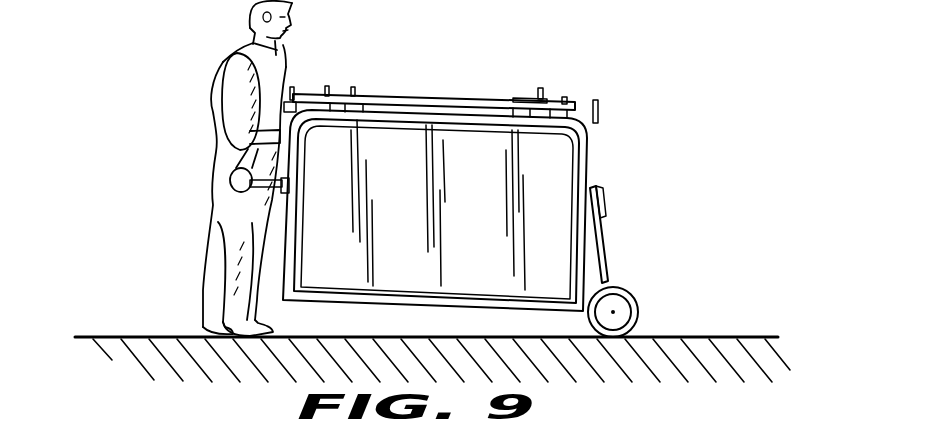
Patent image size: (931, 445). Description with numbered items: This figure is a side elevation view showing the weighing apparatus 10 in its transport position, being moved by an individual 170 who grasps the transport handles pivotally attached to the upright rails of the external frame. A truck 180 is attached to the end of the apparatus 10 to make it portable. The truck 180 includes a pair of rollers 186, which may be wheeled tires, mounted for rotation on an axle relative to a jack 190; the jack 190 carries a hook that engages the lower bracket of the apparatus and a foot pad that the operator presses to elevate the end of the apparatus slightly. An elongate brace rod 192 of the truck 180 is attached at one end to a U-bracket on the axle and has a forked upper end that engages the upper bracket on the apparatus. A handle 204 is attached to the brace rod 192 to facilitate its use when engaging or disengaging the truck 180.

The weighing apparatus 10 is at (480, 73).
The individual 170 is at (228, 58).
The truck 180 is at (700, 248).
The rollers 186 is at (630, 288).
The jack 190 is at (641, 316).
The brace rod 192 is at (603, 238).
The handle 204 is at (601, 207).